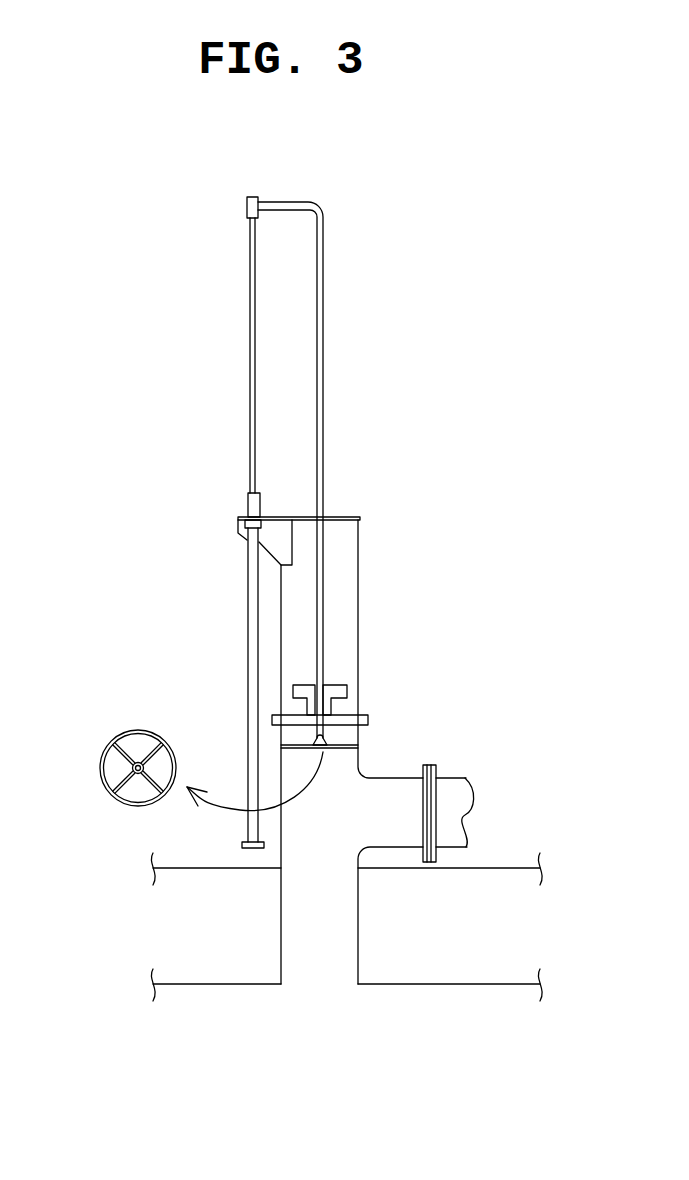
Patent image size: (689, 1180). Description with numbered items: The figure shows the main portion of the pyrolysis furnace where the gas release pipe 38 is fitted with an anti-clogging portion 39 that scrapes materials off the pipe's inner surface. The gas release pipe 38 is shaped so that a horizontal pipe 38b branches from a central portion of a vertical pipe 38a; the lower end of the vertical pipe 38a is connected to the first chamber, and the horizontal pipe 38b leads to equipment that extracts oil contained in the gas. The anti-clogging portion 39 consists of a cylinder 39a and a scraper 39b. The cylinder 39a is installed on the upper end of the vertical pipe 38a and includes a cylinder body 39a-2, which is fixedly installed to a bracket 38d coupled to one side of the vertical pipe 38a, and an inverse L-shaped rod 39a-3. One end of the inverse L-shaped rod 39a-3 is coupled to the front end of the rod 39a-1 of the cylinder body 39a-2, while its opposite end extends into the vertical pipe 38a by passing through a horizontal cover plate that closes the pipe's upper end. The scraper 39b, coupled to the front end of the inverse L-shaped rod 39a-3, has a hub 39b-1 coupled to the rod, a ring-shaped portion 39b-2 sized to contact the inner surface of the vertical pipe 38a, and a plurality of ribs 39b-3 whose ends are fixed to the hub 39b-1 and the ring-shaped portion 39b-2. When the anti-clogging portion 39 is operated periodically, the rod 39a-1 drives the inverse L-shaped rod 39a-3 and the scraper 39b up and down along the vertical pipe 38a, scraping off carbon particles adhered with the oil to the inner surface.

The gas release pipe 38 is at (370, 766).
The vertical pipe 38a is at (281, 855).
The horizontal pipe 38b is at (387, 848).
The bracket 38d is at (268, 548).
The anti-clogging portion 39 is at (204, 656).
The cylinder 39a is at (175, 522).
The rod 39a-1 is at (250, 445).
The cylinder body 39a-2 is at (247, 627).
The inverse L-shaped rod 39a-3 is at (318, 323).
The scraper 39b is at (358, 745).
The hub 39b-1 is at (140, 762).
The ring-shaped portion 39b-2 is at (113, 740).
The ribs 39b-3 is at (118, 783).